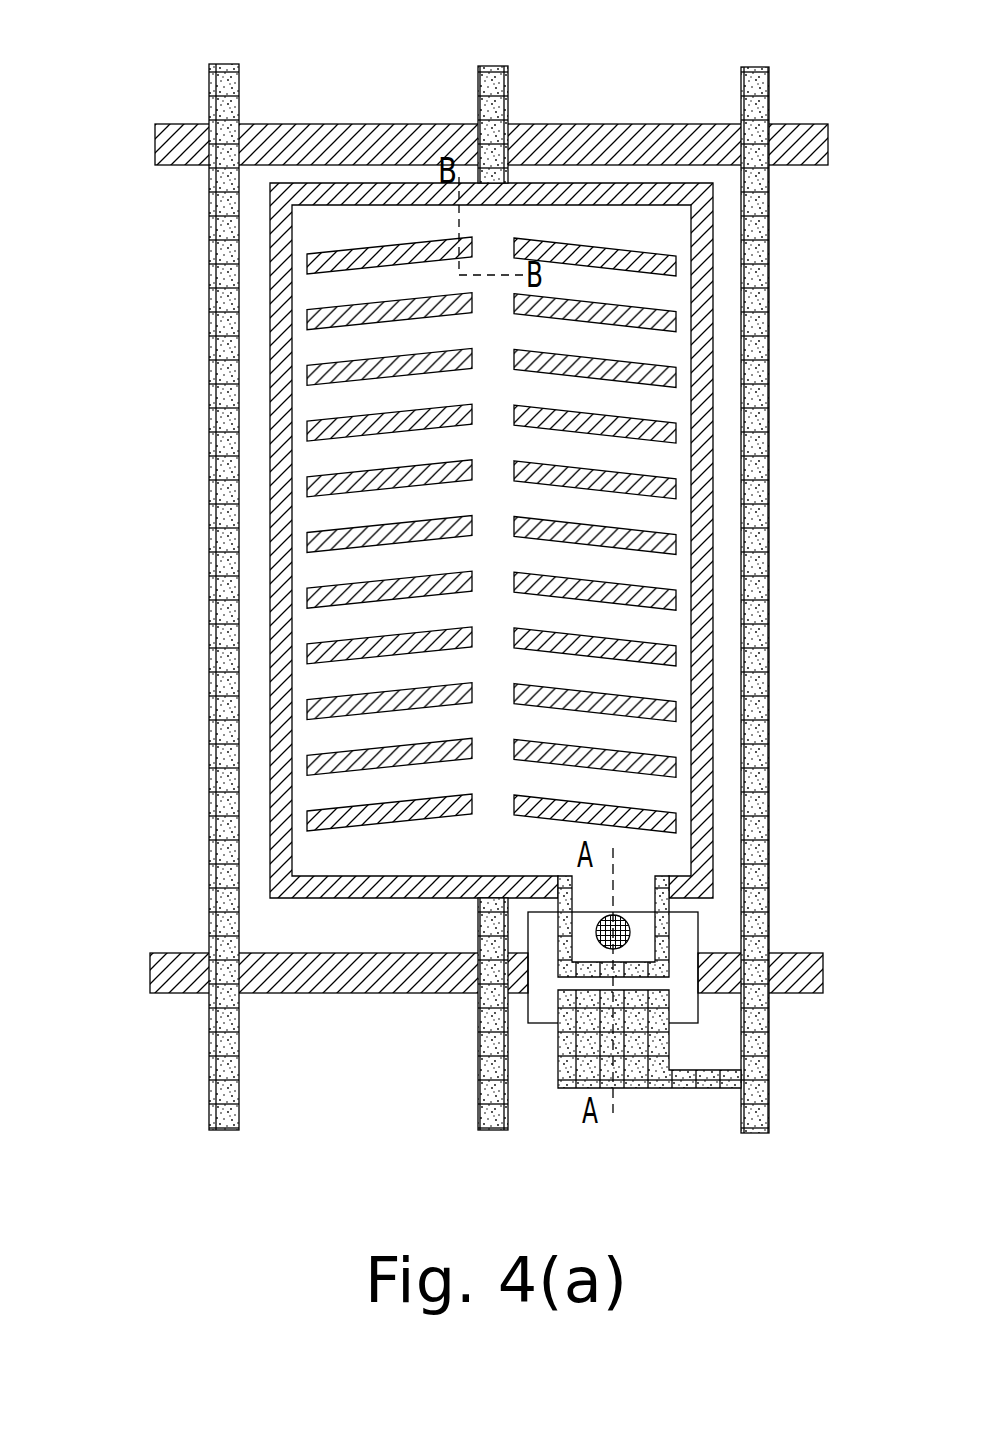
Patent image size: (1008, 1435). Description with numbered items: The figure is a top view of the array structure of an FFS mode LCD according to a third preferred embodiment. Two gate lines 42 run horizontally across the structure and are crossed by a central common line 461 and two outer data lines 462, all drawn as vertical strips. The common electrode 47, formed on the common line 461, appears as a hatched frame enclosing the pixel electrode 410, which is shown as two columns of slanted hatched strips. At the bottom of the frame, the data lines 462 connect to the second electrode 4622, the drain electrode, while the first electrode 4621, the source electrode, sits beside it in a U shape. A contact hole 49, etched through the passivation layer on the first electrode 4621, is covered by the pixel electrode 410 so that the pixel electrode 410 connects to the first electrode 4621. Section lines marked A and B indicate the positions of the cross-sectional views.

The gate lines 42 is at (173, 135).
The common line 461 is at (493, 72).
The data lines 462 is at (753, 563).
The common electrode 47 is at (700, 318).
The pixel electrode 410 is at (653, 460).
The contact hole 49 is at (627, 923).
The first electrode 4621 is at (660, 947).
The second electrode 4622 is at (640, 1060).